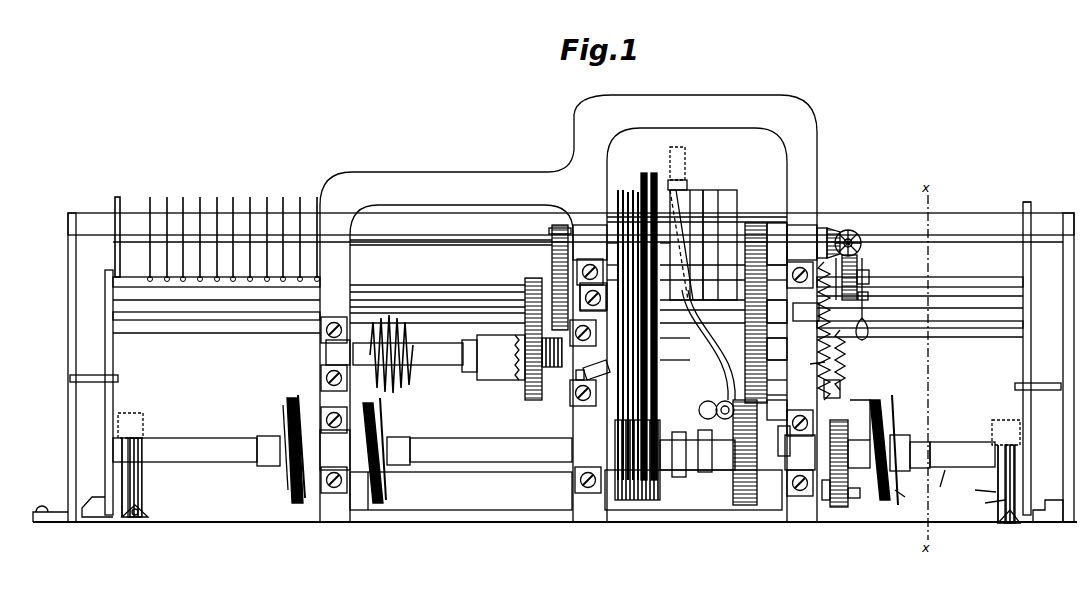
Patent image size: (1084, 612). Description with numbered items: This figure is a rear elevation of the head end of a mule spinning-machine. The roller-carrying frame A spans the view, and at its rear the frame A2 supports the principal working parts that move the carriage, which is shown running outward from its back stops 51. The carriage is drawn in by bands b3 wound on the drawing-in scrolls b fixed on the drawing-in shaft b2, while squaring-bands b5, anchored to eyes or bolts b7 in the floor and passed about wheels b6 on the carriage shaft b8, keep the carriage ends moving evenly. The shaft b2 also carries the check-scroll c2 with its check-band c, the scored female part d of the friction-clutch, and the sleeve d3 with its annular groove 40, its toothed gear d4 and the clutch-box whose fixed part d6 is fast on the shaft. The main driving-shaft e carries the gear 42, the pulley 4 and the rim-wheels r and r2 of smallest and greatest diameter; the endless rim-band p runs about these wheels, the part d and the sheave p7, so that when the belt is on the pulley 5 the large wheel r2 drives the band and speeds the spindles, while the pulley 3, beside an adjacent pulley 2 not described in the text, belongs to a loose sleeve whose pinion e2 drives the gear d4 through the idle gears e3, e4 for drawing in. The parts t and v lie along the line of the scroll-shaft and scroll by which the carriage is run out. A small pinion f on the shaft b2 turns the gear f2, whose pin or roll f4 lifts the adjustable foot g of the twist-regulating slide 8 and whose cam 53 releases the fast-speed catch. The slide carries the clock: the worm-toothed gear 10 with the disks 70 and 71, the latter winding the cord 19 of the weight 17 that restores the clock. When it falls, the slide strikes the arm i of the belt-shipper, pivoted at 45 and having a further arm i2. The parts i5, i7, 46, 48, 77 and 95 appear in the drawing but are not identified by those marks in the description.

The roller-carrying frame A is at (946, 232).
The frame A2 is at (568, 312).
The back stops 51 is at (88, 375).
The drawing-in scrolls b is at (285, 398).
The drawing-in shaft b2 is at (498, 440).
The bands b3 is at (294, 398).
The squaring-bands b5 is at (142, 495).
The wheels b6 is at (120, 448).
The eyes or bolts b7 is at (135, 522).
The shaft of the carriage b8 is at (200, 465).
The check-band c is at (385, 495).
The check-scroll c2 is at (386, 418).
The spring v is at (408, 354).
The clutch sleeve t is at (480, 358).
The rim-band p is at (597, 339).
The sheave p7 is at (590, 375).
The main driving-shaft e is at (550, 238).
The gear 42 is at (555, 254).
The rim-wheel of smallest diameter r is at (636, 338).
The rim-wheel of greatest diameter r2 is at (652, 176).
The pivot pin i5 is at (686, 186).
The key 2 is at (703, 245).
The pulley 3 is at (710, 245).
The pulley 4 is at (696, 245).
The pulley 5 is at (681, 245).
The curved arm i7 is at (722, 368).
The pinion e2 is at (756, 225).
The idle-gear e3 is at (770, 312).
The idle-gear e4 is at (770, 350).
The twist-regulating slide 8 is at (810, 370).
The block 95 is at (806, 312).
The part of clutch-box d6 is at (780, 430).
The pivot 45 is at (706, 405).
The annular groove 40 is at (704, 438).
The scored female part of friction-clutch d is at (668, 430).
The sleeve d3 is at (673, 454).
The toothed gear d4 is at (748, 506).
The arm of belt-shipper i2 is at (732, 500).
The disk 70 is at (820, 254).
The bevel gear 46 is at (834, 228).
The star wheel 77 is at (855, 232).
The disk 71 is at (858, 272).
The worm-toothed gear 10 is at (868, 275).
The cord 19 is at (862, 300).
The weight 17 is at (868, 338).
The spring 48 is at (840, 331).
The arm of belt-shipper i is at (841, 388).
The adjustable foot g is at (862, 413).
The pinion f is at (830, 445).
The gear f2 is at (838, 508).
The cam 53 is at (826, 502).
The pin or roll f4 is at (858, 500).